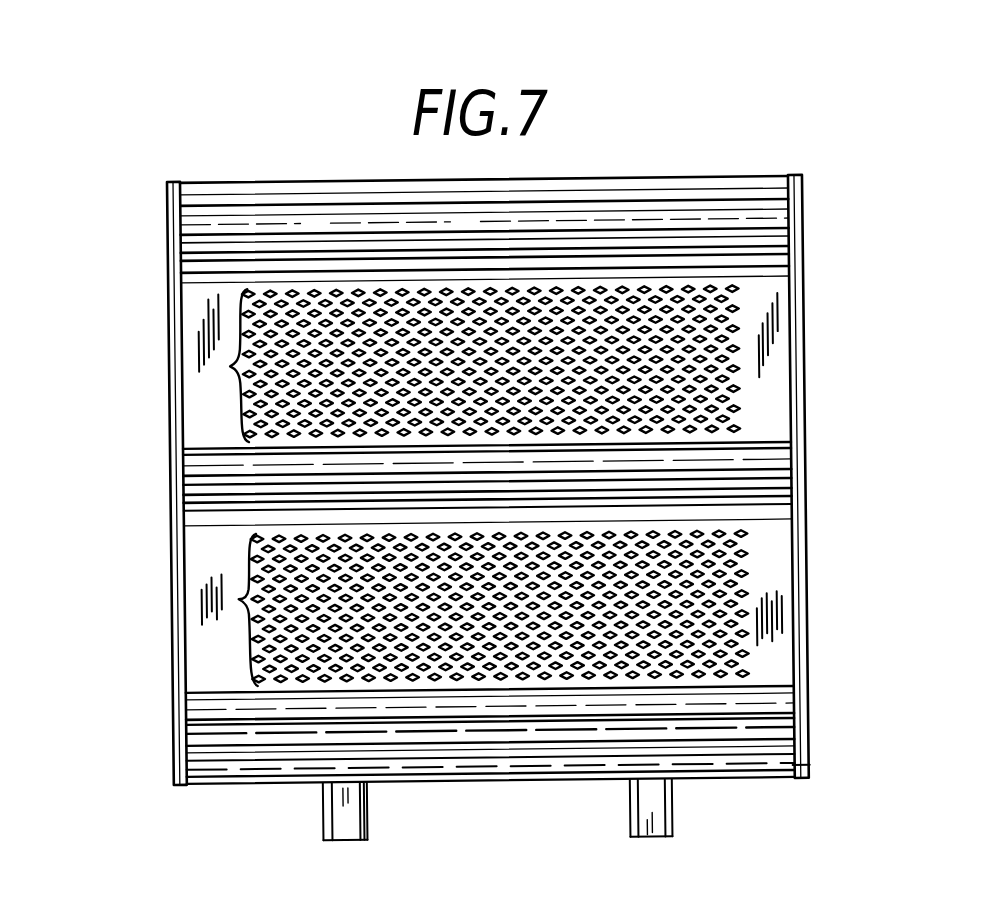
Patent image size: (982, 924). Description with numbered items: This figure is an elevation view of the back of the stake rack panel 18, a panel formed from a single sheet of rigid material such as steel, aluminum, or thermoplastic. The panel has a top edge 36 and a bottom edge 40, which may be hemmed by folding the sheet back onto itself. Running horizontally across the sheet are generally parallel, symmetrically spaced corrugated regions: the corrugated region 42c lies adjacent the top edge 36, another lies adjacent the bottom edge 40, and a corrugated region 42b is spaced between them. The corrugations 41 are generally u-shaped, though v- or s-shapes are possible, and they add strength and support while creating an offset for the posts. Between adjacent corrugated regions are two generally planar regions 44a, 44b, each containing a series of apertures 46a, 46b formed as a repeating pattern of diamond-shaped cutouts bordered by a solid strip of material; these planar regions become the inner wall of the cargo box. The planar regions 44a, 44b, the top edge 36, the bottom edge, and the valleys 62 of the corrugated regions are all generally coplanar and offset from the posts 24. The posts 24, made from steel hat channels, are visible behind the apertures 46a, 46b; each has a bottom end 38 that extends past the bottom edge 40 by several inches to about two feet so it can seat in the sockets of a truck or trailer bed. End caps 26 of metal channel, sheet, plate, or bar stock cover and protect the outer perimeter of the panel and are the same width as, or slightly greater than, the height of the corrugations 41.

The stake rack panel 18 is at (263, 122).
The post 24 is at (340, 845).
The end cap 26 is at (168, 197).
The top edge 36 is at (628, 180).
The bottom end 38 is at (323, 808).
The bottom edge 40 is at (566, 782).
The corrugation 41 is at (775, 474).
The corrugated region 42b is at (198, 493).
The corrugated region 42c is at (172, 245).
The planar region 44a is at (777, 595).
The planar region 44b is at (770, 368).
The series of apertures 46a is at (238, 600).
The series of apertures 46b is at (235, 367).
The valley 62 is at (778, 742).